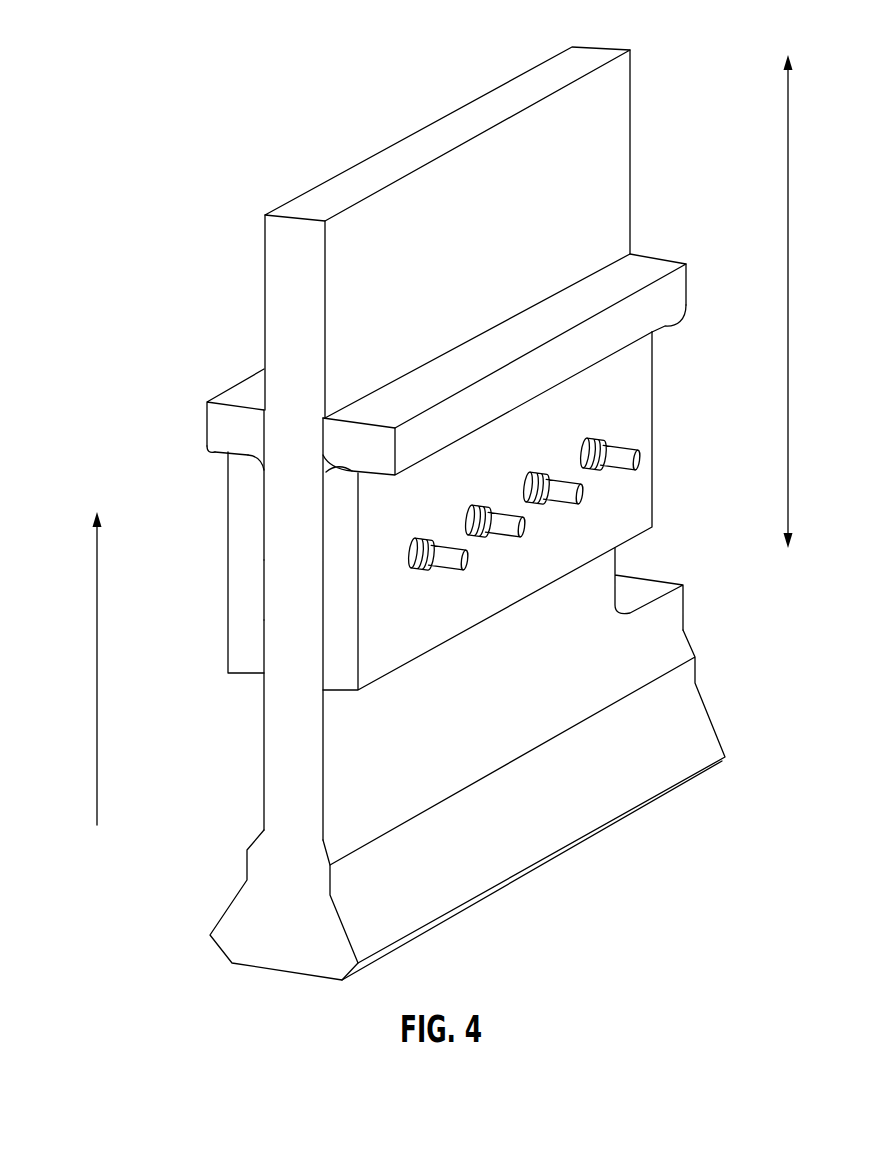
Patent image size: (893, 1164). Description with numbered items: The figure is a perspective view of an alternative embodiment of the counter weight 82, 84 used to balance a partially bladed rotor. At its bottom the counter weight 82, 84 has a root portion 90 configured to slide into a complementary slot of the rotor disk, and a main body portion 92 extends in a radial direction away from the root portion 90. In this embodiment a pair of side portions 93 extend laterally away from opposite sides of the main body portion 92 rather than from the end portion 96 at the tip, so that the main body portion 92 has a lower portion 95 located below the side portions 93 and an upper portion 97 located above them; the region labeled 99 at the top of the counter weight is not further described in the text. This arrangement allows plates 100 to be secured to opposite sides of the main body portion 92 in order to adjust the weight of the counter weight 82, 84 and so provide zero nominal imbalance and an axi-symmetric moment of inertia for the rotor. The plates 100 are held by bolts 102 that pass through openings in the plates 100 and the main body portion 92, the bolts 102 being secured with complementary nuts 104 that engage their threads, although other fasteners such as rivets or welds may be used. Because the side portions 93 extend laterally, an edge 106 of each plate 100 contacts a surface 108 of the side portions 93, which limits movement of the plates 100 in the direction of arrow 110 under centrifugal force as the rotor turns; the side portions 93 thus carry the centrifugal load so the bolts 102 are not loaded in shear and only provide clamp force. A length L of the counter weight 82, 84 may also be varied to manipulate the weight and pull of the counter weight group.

The counter weight 82 is at (543, 234).
The counter weight 84 is at (662, 226).
The root portion 90 is at (247, 938).
The main body portion 92 is at (280, 710).
The side portions 93 is at (222, 420).
The lower portion 95 is at (238, 589).
The end portion 96 is at (426, 364).
The upper portion 97 is at (295, 252).
The airfoil 99 is at (491, 232).
The plates 100 is at (226, 543).
The bolts 102 is at (624, 470).
The nuts 104 is at (425, 540).
The edge 106 is at (248, 458).
The surface 108 is at (203, 453).
The arrow 110 is at (94, 659).
The length L is at (790, 306).